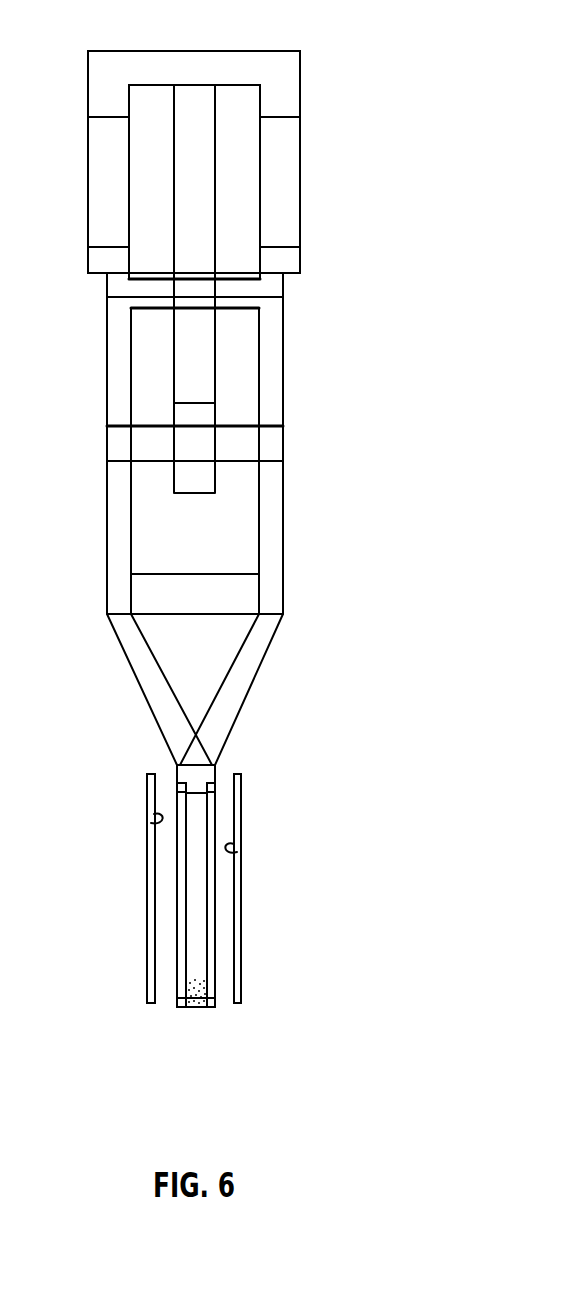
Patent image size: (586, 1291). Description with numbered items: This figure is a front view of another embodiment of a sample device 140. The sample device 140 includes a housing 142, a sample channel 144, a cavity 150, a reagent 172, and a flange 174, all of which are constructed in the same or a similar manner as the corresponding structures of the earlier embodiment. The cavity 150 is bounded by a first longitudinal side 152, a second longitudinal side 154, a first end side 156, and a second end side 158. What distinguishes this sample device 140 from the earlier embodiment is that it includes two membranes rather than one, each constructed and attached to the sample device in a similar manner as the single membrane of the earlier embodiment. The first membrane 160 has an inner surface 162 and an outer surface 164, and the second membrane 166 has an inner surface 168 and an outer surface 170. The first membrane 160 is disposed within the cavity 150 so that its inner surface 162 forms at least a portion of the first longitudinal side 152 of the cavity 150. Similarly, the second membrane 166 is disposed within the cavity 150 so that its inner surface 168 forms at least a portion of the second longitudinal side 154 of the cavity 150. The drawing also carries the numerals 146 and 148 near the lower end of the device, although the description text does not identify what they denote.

The sample device 140 is at (438, 52).
The housing 142 is at (300, 140).
The sample channel 144 is at (198, 1008).
The nozzle tip 146 is at (188, 1008).
The nozzle outlet edge 148 is at (212, 1008).
The cavity 150 is at (196, 925).
The first longitudinal side 152 is at (216, 800).
The second longitudinal side 154 is at (178, 788).
The first end side 156 is at (210, 762).
The second end side 158 is at (178, 1003).
The first membrane 160 is at (237, 820).
The inner surface 162 is at (237, 853).
The outer surface 164 is at (242, 930).
The second membrane 166 is at (150, 880).
The inner surface 168 is at (151, 822).
The outer surface 170 is at (148, 900).
The reagent 172 is at (197, 993).
The flange 174 is at (193, 393).